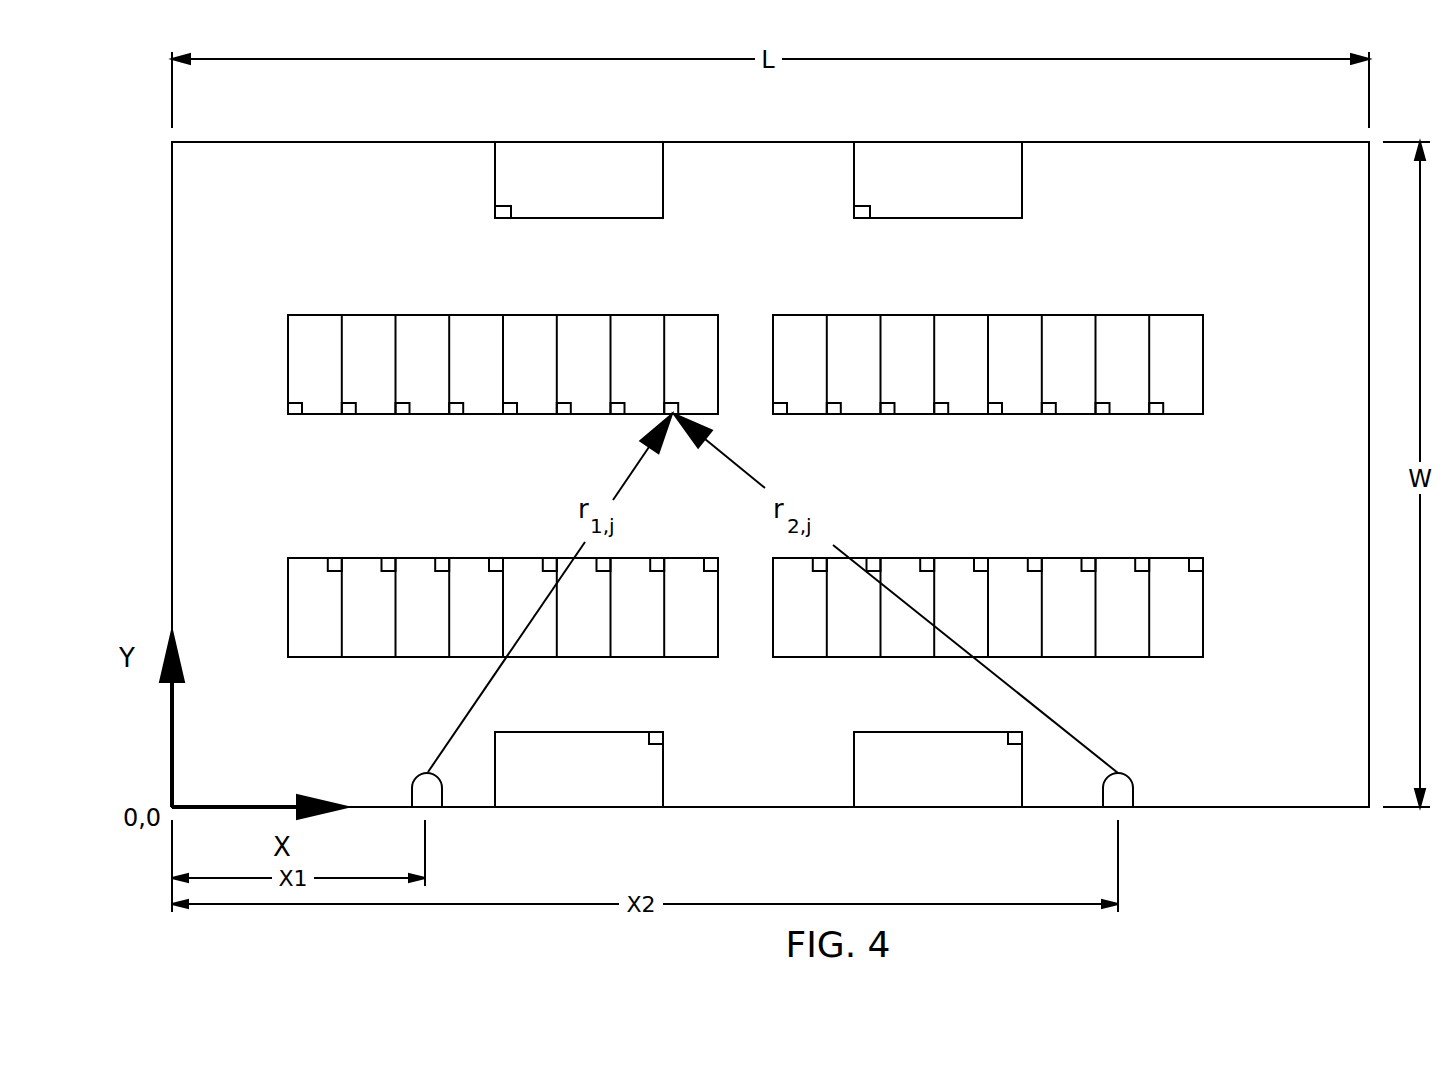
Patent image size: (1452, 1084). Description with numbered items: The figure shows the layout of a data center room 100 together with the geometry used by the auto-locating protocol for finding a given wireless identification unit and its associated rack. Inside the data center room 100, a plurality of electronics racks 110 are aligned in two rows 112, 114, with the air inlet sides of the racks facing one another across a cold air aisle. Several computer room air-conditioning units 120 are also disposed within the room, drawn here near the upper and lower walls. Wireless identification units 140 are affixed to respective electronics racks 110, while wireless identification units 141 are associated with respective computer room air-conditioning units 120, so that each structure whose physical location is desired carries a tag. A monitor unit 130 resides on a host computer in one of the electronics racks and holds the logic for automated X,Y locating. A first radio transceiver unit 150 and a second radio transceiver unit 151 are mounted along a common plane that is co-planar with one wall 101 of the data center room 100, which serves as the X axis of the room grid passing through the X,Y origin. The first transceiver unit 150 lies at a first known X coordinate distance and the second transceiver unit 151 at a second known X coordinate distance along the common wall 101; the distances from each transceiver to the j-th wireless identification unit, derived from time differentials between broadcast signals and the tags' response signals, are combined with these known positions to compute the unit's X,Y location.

The data center room 100 is at (1077, 142).
The common wall 101 is at (762, 807).
The electronics racks 110 is at (528, 315).
The row 112 is at (398, 329).
The row 114 is at (278, 597).
The computer room air-conditioning units 120 is at (758, 474).
The monitor unit 130 is at (1203, 352).
The wireless identification units 140 is at (295, 414).
The wireless identification units 141 is at (1020, 732).
The first radio transceiver unit 150 is at (412, 773).
The second radio transceiver unit 151 is at (1133, 780).